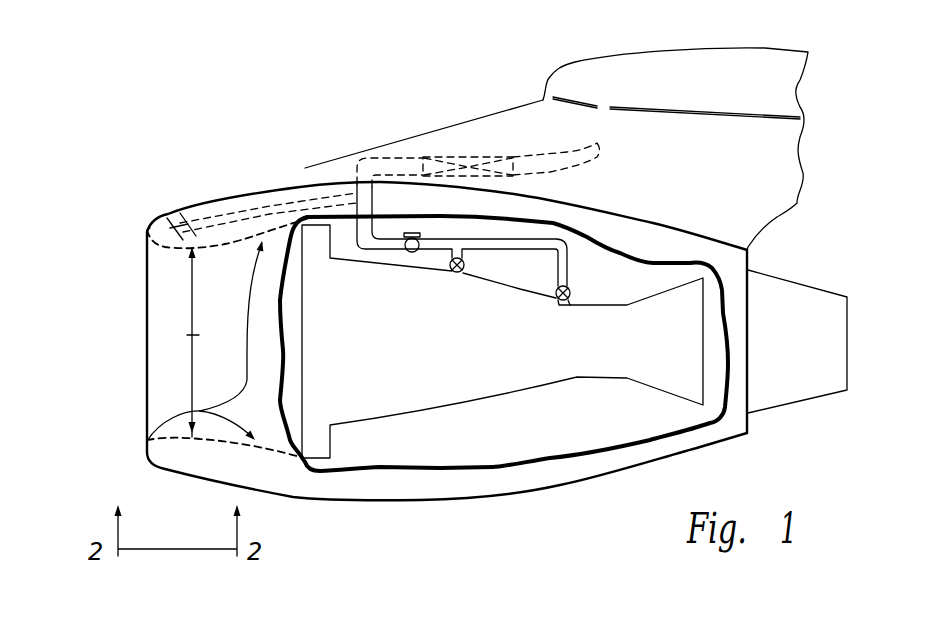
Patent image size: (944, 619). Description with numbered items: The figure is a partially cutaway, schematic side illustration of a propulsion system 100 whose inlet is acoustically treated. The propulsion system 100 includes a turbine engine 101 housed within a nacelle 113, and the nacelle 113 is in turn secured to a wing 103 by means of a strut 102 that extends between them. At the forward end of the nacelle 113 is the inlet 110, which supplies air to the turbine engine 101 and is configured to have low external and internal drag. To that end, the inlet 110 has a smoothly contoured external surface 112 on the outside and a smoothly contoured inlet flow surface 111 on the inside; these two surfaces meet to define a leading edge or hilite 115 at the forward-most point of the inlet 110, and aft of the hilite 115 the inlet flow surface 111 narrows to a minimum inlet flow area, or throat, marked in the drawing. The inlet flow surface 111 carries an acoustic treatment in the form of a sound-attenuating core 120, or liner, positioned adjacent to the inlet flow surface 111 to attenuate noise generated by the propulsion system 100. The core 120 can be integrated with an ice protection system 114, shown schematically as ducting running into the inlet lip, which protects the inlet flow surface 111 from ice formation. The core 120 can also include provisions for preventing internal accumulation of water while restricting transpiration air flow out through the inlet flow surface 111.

The propulsion system 100 is at (307, 137).
The turbine engine 101 is at (537, 427).
The strut 102 is at (452, 127).
The wing 103 is at (558, 67).
The inlet 110 is at (140, 388).
The inlet flow surface 111 is at (170, 250).
The external surface 112 is at (330, 184).
The nacelle 113 is at (363, 503).
The ice protection system 114 is at (200, 206).
The hilite 115 is at (146, 229).
The core 120 is at (147, 441).